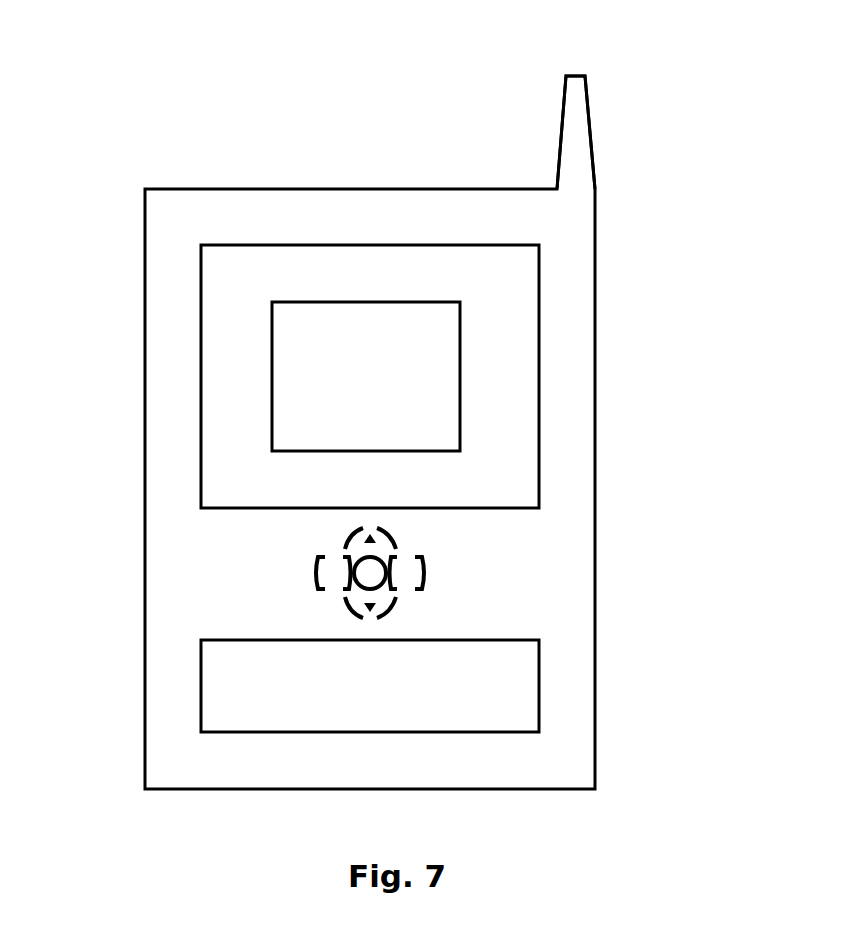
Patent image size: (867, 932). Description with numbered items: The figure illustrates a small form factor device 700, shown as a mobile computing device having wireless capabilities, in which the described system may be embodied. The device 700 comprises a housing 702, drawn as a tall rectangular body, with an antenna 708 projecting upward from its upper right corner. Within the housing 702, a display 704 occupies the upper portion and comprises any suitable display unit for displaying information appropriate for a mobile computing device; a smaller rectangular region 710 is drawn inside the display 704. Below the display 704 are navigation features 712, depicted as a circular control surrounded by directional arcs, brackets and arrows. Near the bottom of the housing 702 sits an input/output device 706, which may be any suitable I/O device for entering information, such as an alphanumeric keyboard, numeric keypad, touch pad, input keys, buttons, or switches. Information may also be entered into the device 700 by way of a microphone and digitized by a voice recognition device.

The small form factor device 700 is at (157, 86).
The housing 702 is at (595, 489).
The display 704 is at (539, 264).
The input/output (I/O) device 706 is at (539, 676).
The antenna 708 is at (562, 125).
The display window 710 is at (460, 402).
The navigation features 712 is at (452, 562).